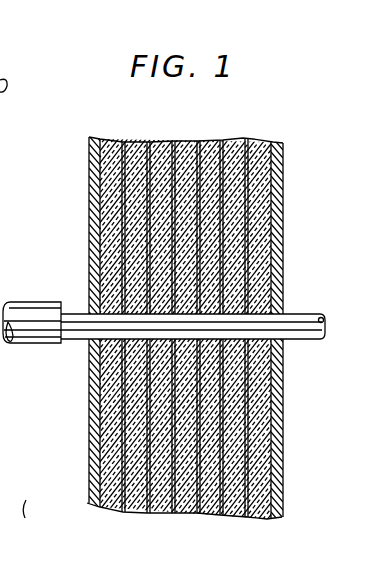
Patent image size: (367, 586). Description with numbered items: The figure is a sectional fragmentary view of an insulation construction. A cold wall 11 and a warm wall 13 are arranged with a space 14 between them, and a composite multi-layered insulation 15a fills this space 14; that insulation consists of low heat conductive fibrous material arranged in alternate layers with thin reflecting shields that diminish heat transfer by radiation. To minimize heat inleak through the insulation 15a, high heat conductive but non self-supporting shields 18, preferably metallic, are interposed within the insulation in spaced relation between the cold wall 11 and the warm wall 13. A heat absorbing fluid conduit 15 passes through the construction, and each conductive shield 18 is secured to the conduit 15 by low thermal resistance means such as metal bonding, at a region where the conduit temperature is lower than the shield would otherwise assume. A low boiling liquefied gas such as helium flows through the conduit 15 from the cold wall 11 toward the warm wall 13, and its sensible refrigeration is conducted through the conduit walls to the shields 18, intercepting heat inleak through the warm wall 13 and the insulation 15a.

The cold wall 11 is at (98, 193).
The warm wall 13 is at (283, 219).
The space 14 is at (233, 155).
The heat absorbing fluid conduit 15 is at (75, 310).
The composite multi-layered insulation 15a is at (187, 147).
The heat conductive shields 18 is at (148, 515).